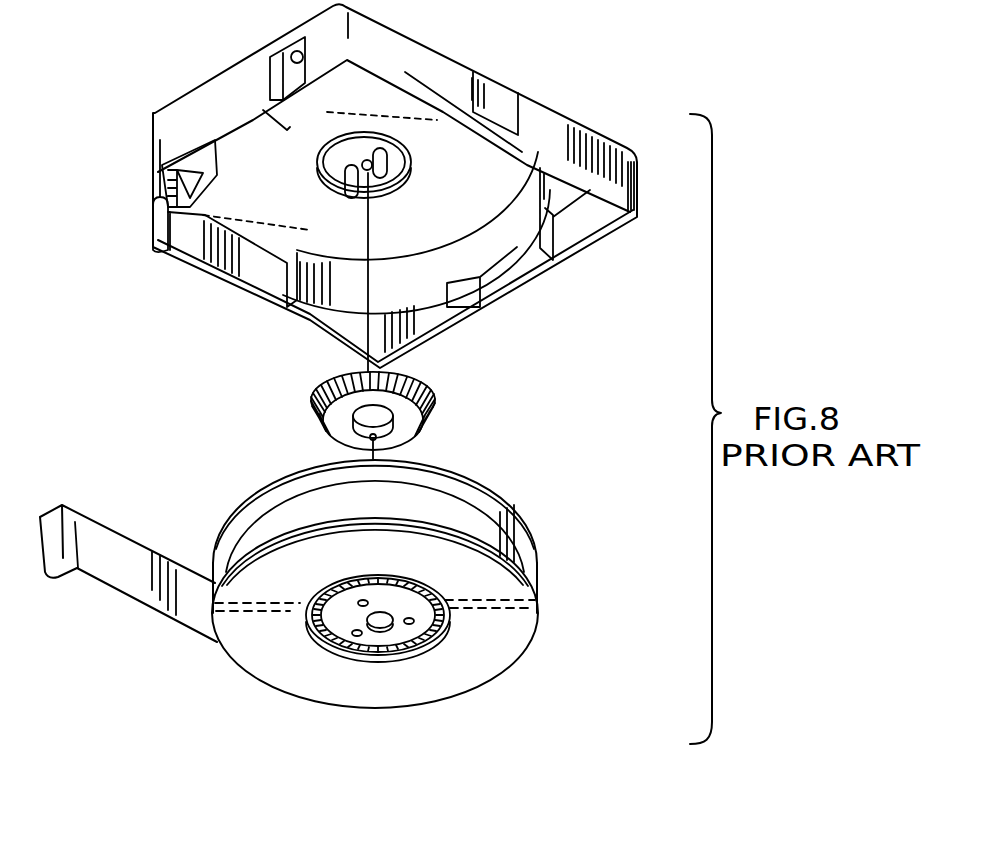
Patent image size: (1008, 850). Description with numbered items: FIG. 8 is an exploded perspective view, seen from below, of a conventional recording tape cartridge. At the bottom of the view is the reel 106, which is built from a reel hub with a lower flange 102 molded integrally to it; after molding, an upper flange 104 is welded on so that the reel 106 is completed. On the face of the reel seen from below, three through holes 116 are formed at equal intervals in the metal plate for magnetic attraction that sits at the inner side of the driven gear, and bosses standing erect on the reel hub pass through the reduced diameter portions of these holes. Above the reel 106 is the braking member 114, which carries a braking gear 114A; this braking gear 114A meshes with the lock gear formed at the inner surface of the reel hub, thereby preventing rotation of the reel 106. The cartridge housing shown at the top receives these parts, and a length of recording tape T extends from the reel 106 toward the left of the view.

The lower flange 102 is at (502, 503).
The upper flange 104 is at (522, 623).
The reel 106 is at (426, 612).
The braking member 114 is at (437, 383).
The braking gear 114A is at (437, 427).
The through holes 116 is at (360, 607).
The tape T is at (118, 578).